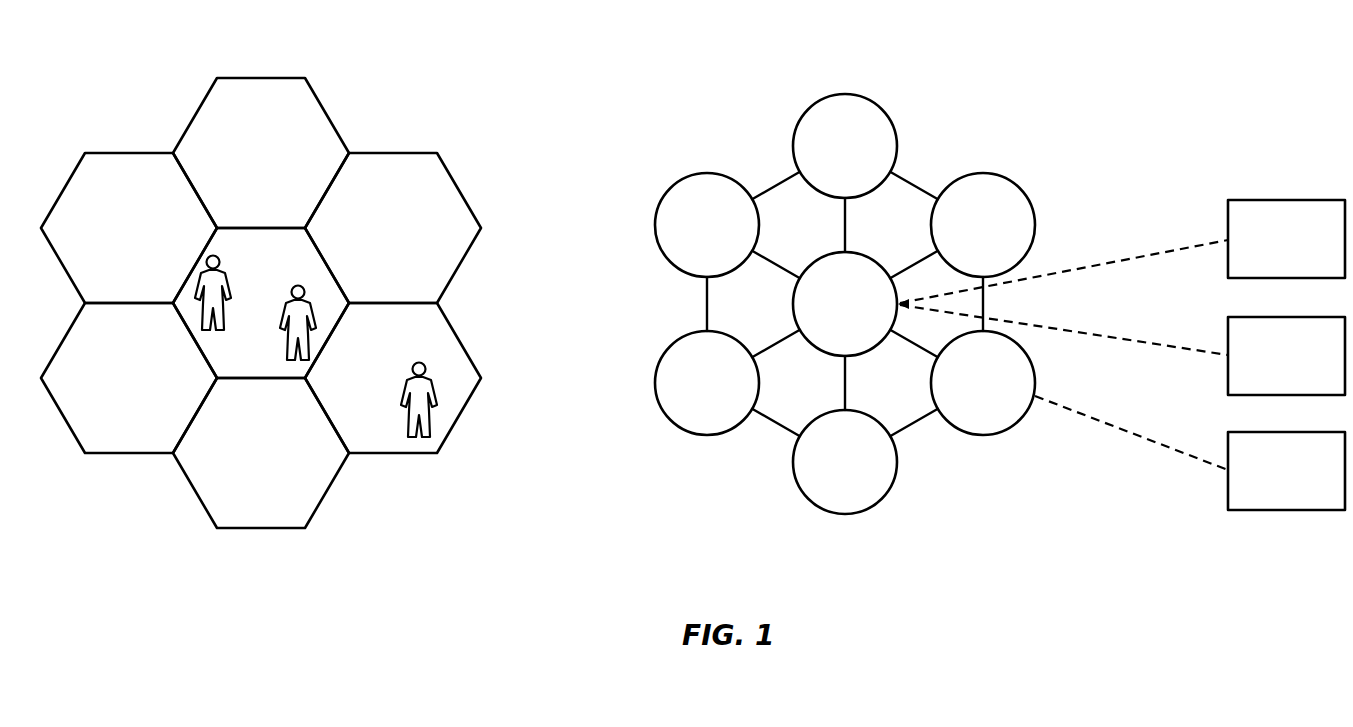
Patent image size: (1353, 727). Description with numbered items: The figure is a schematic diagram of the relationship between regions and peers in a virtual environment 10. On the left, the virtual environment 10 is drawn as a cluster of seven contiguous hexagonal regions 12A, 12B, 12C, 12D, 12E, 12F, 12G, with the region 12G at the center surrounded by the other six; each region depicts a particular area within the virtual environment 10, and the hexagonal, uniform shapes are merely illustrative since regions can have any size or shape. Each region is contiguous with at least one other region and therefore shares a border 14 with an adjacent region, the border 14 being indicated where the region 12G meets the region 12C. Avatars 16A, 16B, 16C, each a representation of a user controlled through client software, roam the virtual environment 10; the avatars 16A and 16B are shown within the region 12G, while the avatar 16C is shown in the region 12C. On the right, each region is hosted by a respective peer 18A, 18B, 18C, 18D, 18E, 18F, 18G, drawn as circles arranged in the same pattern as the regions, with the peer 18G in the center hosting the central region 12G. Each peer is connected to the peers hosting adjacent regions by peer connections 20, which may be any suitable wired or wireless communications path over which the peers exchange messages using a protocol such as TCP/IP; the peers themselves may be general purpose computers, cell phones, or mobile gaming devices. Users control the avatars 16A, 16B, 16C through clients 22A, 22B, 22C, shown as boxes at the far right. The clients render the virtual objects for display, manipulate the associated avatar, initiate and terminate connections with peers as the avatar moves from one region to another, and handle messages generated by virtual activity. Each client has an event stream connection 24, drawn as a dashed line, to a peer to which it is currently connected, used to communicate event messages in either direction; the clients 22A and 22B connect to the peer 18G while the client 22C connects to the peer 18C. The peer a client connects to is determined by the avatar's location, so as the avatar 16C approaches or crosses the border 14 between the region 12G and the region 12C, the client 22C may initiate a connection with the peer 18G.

The virtual environment 10 is at (411, 78).
The region 12A is at (239, 109).
The region 12B is at (371, 192).
The region 12C is at (371, 339).
The region 12D is at (239, 415).
The region 12E is at (107, 339).
The region 12F is at (107, 190).
The region 12G is at (239, 260).
The border 14 is at (320, 343).
The avatar 16A is at (288, 350).
The avatar 16B is at (200, 272).
The avatar 16C is at (406, 421).
The peer 18A is at (823, 130).
The peer 18B is at (961, 209).
The peer 18C is at (961, 367).
The peer 18D is at (823, 446).
The peer 18E is at (685, 367).
The peer 18F is at (685, 209).
The peer 18G is at (823, 288).
The peer connection 20 is at (771, 184).
The client 22A is at (1264, 250).
The client 22B is at (1264, 367).
The client 22C is at (1264, 482).
The event stream connection 24 is at (1138, 256).